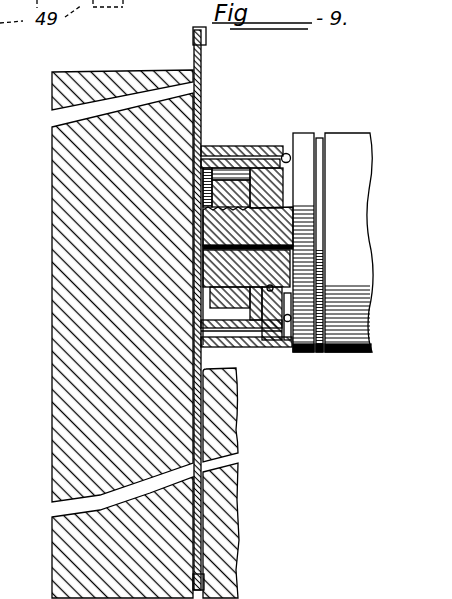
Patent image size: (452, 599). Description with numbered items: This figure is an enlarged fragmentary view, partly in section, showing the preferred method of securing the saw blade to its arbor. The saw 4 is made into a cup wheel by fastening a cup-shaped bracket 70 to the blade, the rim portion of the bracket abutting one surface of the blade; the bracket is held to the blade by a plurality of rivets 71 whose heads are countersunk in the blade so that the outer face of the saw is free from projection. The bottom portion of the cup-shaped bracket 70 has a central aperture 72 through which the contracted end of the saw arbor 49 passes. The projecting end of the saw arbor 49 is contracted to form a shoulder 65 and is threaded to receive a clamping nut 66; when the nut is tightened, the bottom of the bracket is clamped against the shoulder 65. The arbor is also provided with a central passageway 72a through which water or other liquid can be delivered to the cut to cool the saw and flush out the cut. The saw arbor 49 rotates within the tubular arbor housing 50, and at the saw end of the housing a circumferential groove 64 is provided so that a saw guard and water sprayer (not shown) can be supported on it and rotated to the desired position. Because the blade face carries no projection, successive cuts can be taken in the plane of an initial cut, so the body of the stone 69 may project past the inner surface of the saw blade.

The saw 4 is at (200, 121).
The saw arbor 49 is at (292, 202).
The arbor housing 50 is at (345, 133).
The circumferential groove 64 is at (317, 133).
The shoulder 65 is at (293, 353).
The clamping nut 66 is at (248, 146).
The stone 69 is at (75, 317).
The cup-shaped bracket 70 is at (245, 348).
The rivets 71 is at (222, 146).
The central aperture 72 is at (278, 342).
The central passageway 72a is at (292, 242).